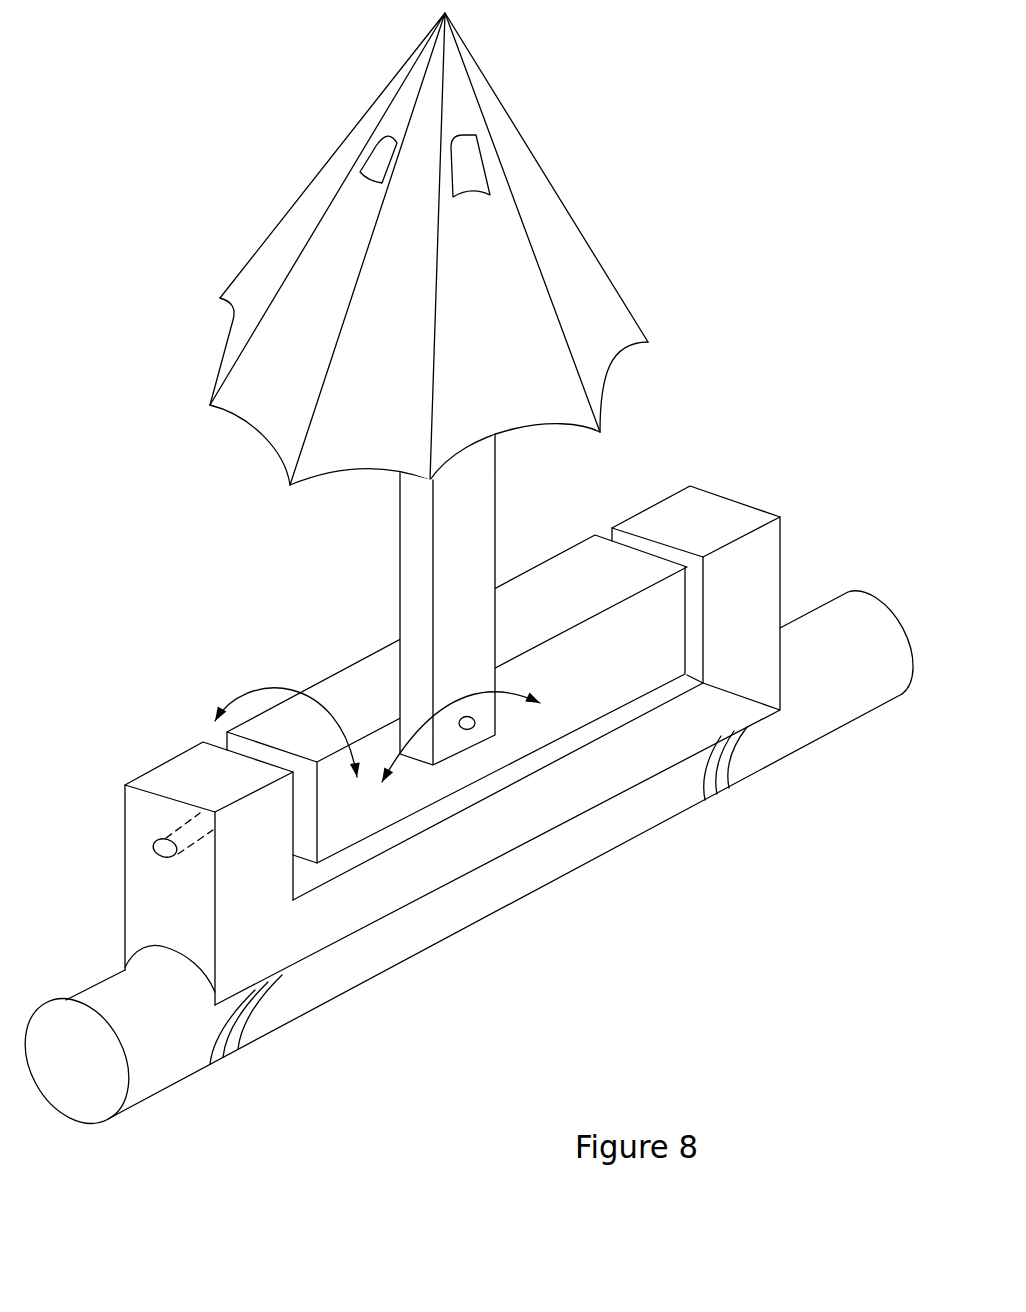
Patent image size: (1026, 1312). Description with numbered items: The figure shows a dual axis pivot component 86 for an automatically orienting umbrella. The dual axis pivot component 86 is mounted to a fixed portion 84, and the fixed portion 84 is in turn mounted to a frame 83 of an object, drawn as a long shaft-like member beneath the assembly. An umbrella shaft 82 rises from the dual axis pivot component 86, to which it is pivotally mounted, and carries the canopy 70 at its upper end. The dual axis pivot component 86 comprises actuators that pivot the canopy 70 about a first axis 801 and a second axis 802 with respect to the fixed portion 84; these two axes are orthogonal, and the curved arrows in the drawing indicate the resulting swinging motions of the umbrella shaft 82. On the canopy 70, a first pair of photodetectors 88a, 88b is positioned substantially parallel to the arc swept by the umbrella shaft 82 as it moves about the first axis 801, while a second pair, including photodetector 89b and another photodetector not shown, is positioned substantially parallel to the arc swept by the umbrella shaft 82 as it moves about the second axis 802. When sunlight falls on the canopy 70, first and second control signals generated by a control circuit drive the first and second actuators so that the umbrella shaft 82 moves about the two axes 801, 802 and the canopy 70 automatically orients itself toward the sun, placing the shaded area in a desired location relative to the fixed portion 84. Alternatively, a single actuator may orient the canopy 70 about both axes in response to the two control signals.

The canopy 70 is at (613, 280).
The umbrella shaft 82 is at (497, 515).
The frame 83 is at (765, 767).
The fixed portion 84 is at (782, 574).
The dual axis pivot component 86 is at (362, 703).
The photodetector 88a is at (382, 153).
The photodetector 88b is at (502, 104).
The photodetector 89b is at (475, 173).
The first axis 801 is at (473, 729).
The second axis 802 is at (153, 847).